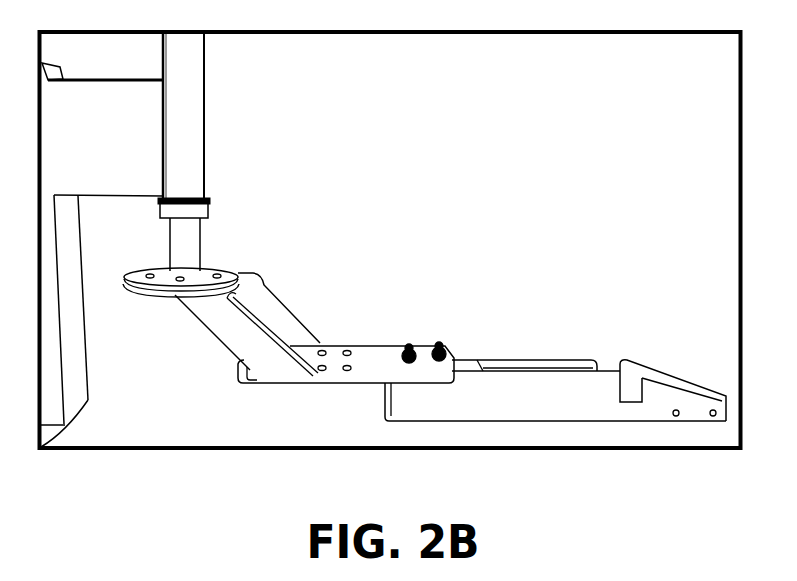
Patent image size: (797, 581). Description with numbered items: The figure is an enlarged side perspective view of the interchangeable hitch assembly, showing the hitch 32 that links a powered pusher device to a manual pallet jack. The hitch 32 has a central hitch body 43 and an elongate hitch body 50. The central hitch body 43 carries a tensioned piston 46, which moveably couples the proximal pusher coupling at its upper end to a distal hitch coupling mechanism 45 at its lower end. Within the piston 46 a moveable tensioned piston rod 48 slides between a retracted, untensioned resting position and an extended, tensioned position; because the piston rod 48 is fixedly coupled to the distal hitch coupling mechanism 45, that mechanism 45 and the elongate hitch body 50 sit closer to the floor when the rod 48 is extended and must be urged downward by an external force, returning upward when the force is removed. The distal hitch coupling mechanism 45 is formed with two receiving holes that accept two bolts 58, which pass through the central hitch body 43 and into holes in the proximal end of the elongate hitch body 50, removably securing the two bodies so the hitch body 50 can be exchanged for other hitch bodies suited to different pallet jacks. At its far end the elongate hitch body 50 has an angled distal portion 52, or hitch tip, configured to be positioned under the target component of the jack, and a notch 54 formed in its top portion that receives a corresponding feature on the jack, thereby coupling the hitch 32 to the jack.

The hitch 32 is at (528, 438).
The central hitch body 43 is at (312, 300).
The distal hitch coupling mechanism 45 is at (369, 361).
The tensioned piston 46 is at (194, 123).
The tensioned piston rod 48 is at (192, 242).
The elongate hitch body 50 is at (578, 414).
The angled distal portion 52 is at (668, 346).
The notch 54 is at (604, 350).
The bolts 58 is at (445, 326).